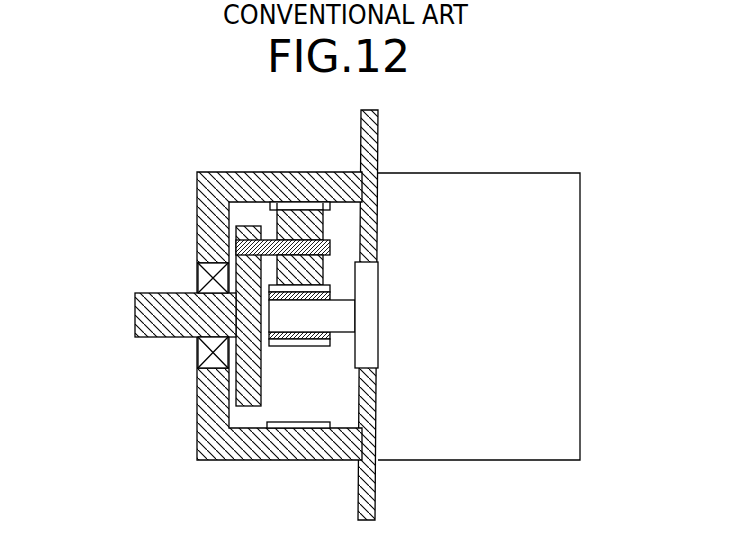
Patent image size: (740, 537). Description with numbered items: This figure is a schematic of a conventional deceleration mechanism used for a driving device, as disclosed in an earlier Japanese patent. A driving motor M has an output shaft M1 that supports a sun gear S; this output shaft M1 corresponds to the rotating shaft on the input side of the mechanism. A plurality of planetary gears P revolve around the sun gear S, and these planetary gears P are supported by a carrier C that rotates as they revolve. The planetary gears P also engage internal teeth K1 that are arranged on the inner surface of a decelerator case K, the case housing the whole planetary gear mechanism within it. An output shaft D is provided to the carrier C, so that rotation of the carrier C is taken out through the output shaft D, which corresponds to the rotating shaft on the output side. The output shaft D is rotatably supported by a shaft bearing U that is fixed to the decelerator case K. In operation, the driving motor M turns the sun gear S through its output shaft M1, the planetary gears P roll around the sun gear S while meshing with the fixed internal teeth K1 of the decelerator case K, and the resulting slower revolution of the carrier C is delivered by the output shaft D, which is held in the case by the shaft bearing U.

The decelerator case K is at (235, 172).
The internal teeth K1 is at (292, 420).
The driving motor M is at (516, 182).
The output shaft of driving motor M1 is at (313, 323).
The planetary gears P is at (323, 235).
The carrier C is at (247, 385).
The sun gear S is at (303, 342).
The shaft bearing U is at (202, 275).
The output shaft D is at (135, 292).